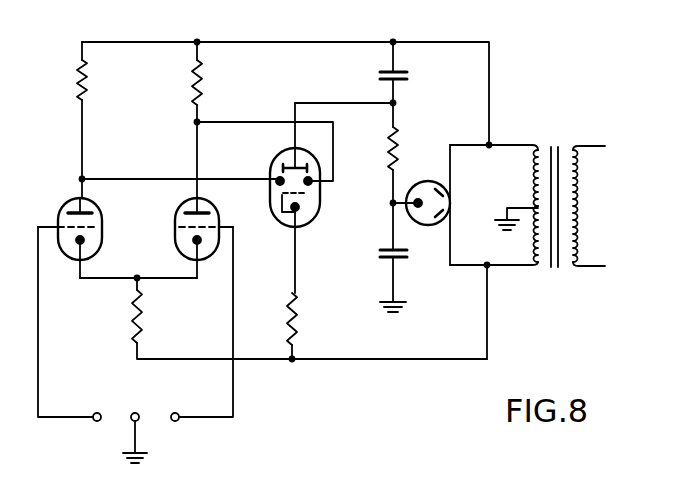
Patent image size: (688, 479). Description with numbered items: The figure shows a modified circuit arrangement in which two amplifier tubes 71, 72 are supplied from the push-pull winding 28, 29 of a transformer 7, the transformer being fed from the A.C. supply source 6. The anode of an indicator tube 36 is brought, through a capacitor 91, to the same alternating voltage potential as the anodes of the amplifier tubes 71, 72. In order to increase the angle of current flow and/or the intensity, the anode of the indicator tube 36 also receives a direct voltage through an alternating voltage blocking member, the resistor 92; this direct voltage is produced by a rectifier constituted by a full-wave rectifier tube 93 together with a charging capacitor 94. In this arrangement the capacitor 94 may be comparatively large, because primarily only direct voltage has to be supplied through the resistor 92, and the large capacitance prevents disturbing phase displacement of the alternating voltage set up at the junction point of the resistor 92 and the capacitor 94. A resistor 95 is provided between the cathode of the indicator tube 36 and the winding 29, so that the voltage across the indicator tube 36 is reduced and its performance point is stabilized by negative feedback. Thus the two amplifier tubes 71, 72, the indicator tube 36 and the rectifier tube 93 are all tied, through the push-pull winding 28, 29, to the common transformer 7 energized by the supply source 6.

The amplifier tube 71 is at (70, 237).
The amplifier tube 72 is at (206, 238).
The indicator tube 36 is at (287, 198).
The capacitor 91 is at (399, 72).
The resistor 92 is at (404, 153).
The full-wave rectifier tube 93 is at (440, 203).
The charging capacitor 94 is at (398, 257).
The resistor 95 is at (304, 326).
The push-pull winding 28 is at (523, 178).
The push-pull winding 29 is at (523, 234).
The transformer 7 is at (555, 197).
The A.C. supply source 6 is at (589, 206).